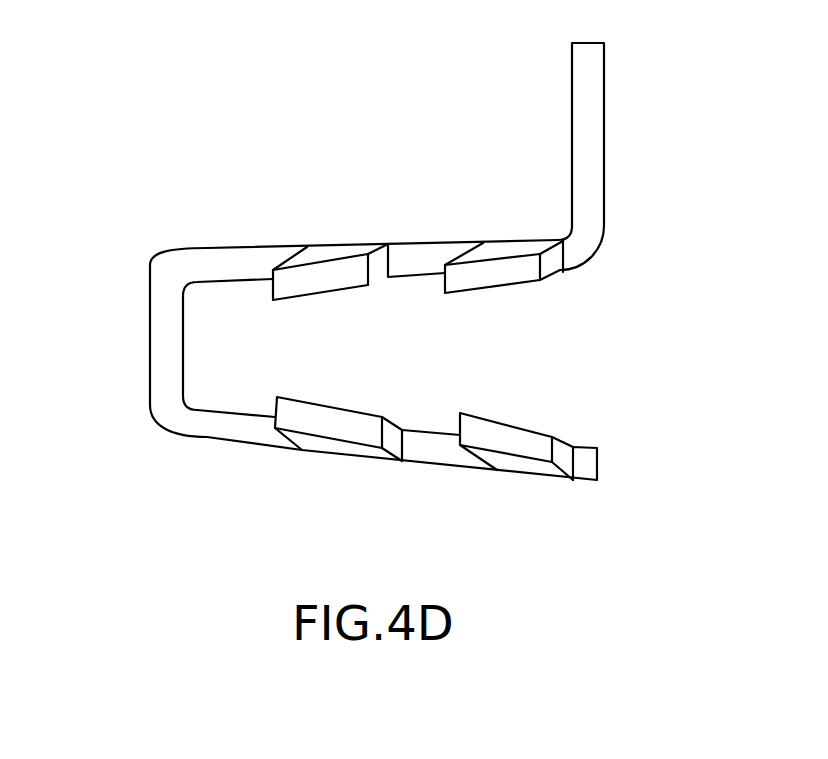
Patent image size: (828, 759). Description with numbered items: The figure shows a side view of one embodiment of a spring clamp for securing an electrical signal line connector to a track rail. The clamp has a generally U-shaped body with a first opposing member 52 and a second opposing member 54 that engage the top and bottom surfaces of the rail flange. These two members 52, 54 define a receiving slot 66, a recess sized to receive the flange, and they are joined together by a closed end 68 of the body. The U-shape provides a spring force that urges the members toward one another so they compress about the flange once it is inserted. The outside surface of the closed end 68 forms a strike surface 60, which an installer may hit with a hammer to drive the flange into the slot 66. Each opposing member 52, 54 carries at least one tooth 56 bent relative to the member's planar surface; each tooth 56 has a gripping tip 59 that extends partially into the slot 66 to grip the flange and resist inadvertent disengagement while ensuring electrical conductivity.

The first opposing member 52 is at (437, 492).
The second opposing member 54 is at (433, 224).
The tooth 56 is at (313, 283).
The gripping tip 59 is at (443, 295).
The strike surface 60 is at (150, 337).
The receiving slot 66 is at (583, 362).
The closed end 68 is at (172, 347).